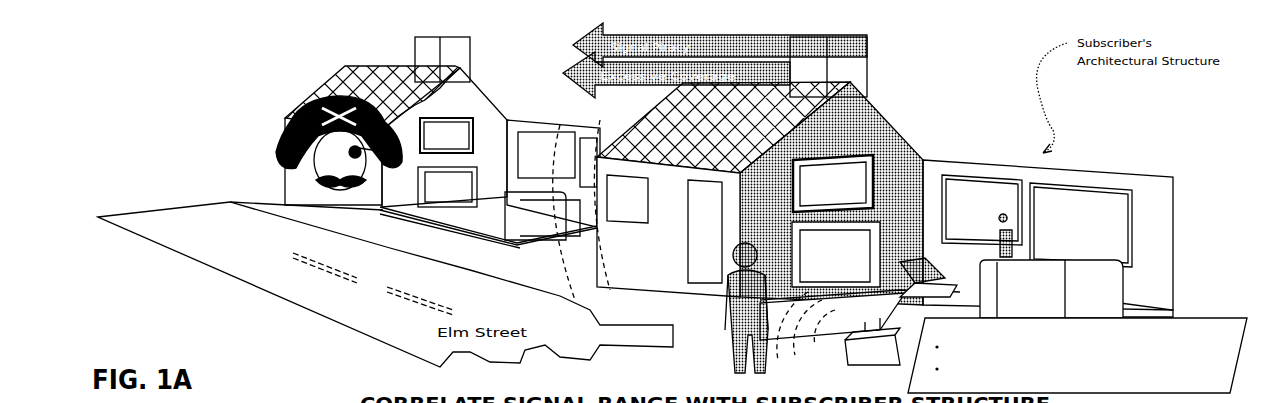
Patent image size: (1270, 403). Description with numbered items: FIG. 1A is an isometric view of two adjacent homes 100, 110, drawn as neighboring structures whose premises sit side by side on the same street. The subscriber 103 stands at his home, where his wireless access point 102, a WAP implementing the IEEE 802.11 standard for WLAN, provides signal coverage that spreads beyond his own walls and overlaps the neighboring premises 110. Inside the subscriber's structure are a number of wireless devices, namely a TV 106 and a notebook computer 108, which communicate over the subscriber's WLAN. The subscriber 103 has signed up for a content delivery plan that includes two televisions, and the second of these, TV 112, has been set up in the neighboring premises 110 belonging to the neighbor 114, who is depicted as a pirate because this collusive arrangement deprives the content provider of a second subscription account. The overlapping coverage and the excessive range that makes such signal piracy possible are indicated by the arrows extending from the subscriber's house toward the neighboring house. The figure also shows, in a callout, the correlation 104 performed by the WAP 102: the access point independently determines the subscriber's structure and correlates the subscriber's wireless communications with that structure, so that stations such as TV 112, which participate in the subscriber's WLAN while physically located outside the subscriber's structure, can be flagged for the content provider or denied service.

The home 100 is at (895, 130).
The wireless access point (WAP) 102 is at (847, 360).
The subscriber 103 is at (756, 316).
The correlation of subscriber's structure with wireless coverage 104 is at (1202, 325).
The TV 106 is at (812, 163).
The notebook computer 108 is at (927, 277).
The neighboring structure 110 is at (463, 85).
The TV 112 is at (447, 121).
The neighbor 114 is at (281, 150).